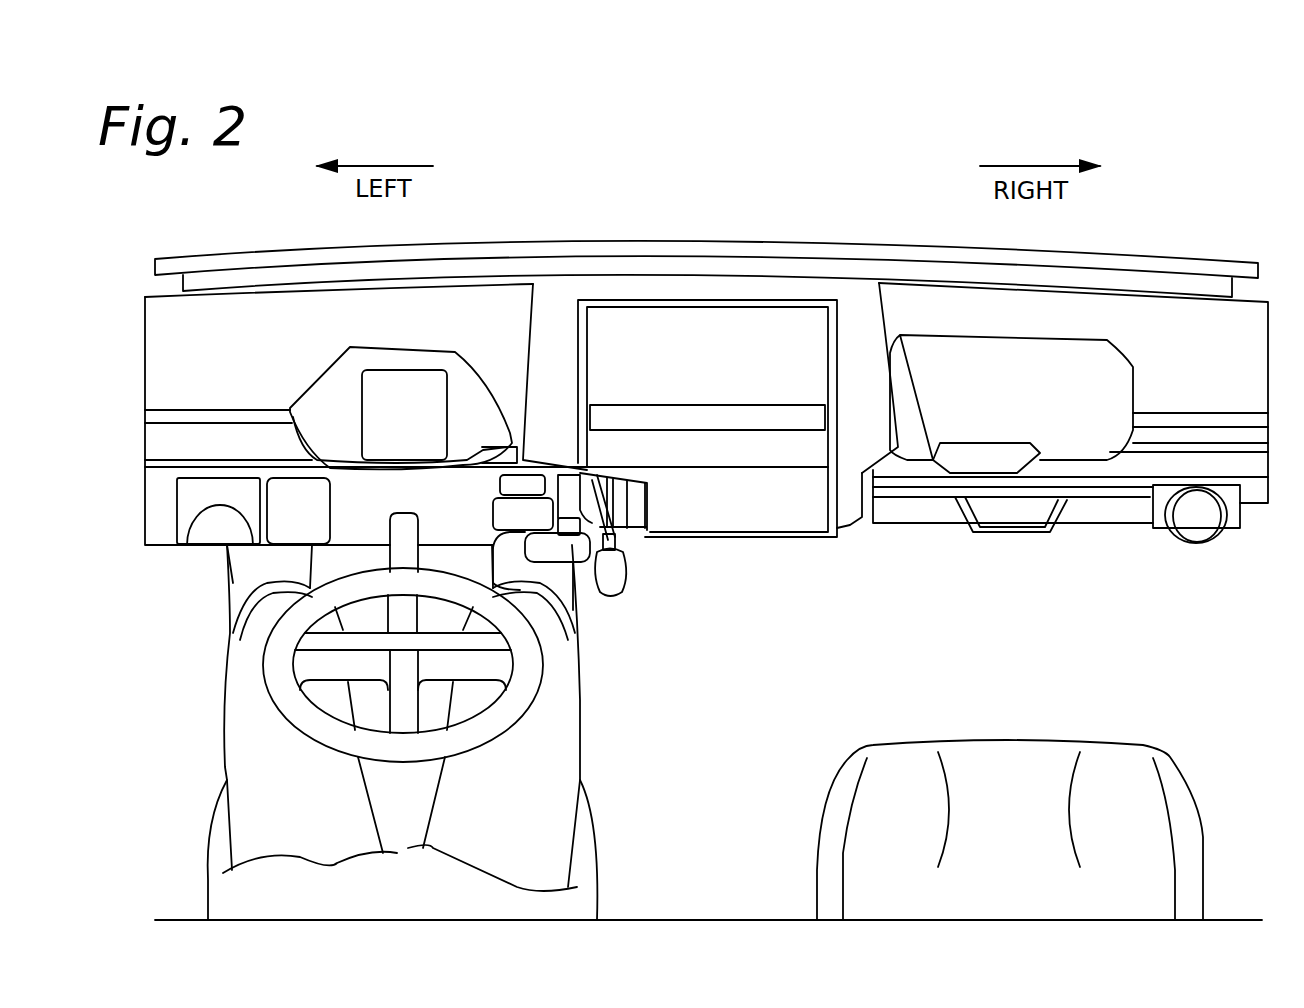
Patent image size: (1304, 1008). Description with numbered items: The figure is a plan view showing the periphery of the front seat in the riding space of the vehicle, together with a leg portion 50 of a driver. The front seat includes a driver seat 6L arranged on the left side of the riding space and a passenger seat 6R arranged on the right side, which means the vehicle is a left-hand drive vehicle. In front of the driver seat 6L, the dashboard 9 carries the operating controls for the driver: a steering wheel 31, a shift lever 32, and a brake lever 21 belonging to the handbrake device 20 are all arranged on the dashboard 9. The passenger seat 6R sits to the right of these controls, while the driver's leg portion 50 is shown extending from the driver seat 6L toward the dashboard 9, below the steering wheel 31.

The dashboard 9 is at (777, 540).
The handbrake device 20 is at (672, 555).
The brake lever 21 is at (620, 543).
The shift lever 32 is at (615, 598).
The steering wheel 31 is at (535, 662).
The leg portion 50 is at (570, 715).
The driver seat 6L is at (449, 732).
The passenger seat 6R is at (1010, 752).